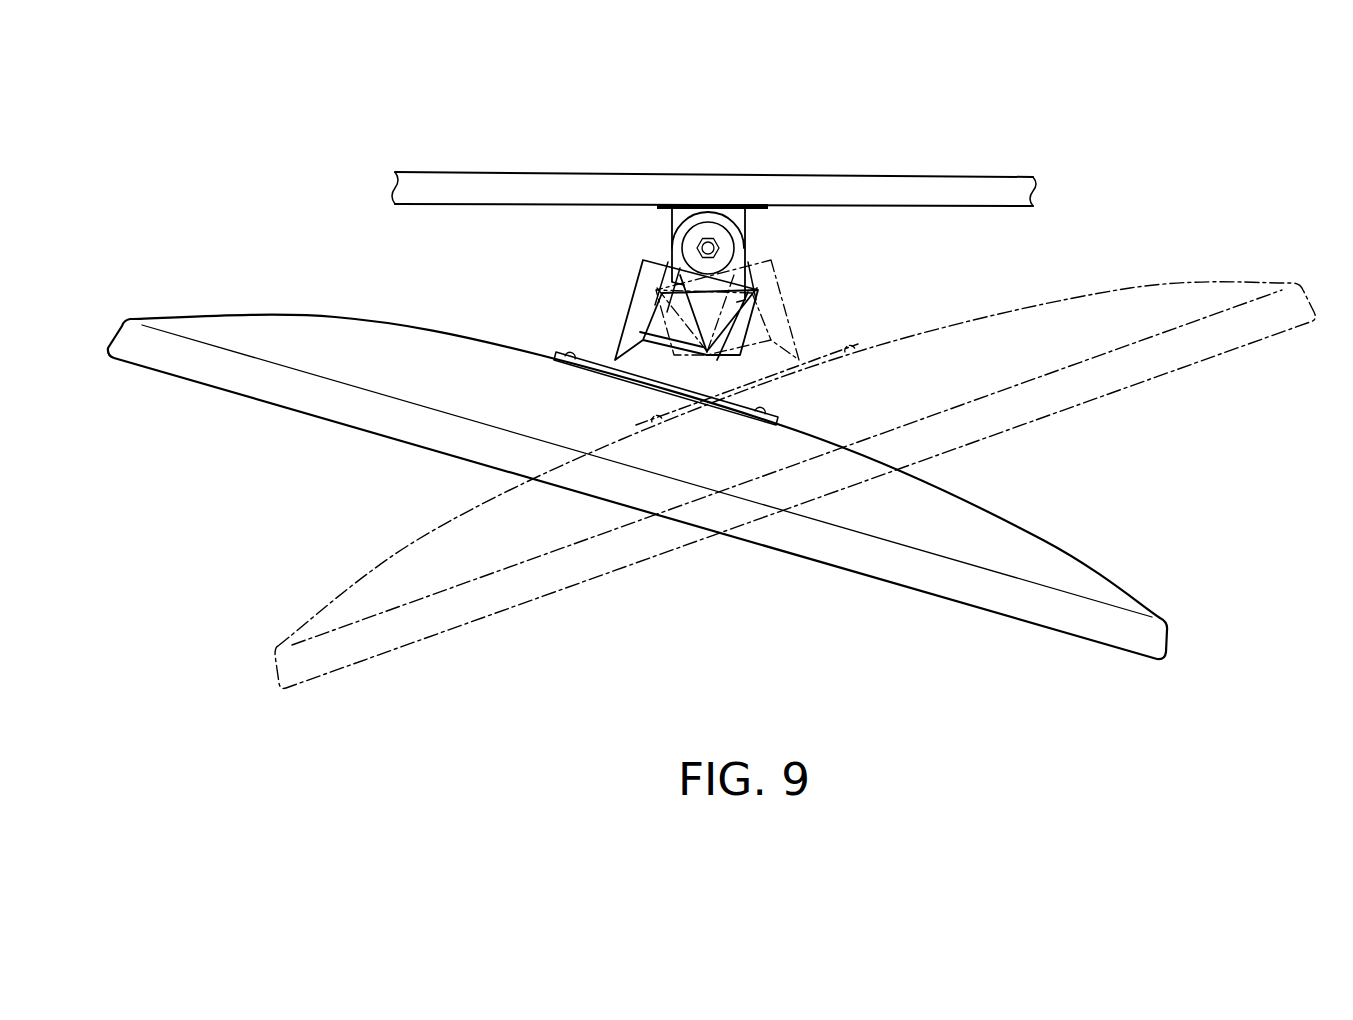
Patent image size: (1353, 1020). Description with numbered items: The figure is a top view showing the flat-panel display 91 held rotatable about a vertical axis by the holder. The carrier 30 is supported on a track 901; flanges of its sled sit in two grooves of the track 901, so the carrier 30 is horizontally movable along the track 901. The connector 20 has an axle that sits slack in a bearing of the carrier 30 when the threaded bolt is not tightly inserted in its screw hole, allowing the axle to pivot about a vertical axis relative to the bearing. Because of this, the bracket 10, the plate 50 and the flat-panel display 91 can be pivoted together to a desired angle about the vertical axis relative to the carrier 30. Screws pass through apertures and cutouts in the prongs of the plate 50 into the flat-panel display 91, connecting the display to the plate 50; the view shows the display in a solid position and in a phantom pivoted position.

The track 901 is at (879, 165).
The carrier 30 is at (760, 214).
The connector 20 is at (662, 248).
The bracket 10 is at (604, 330).
The plate 50 is at (548, 343).
The flat-panel display 91 is at (1088, 540).